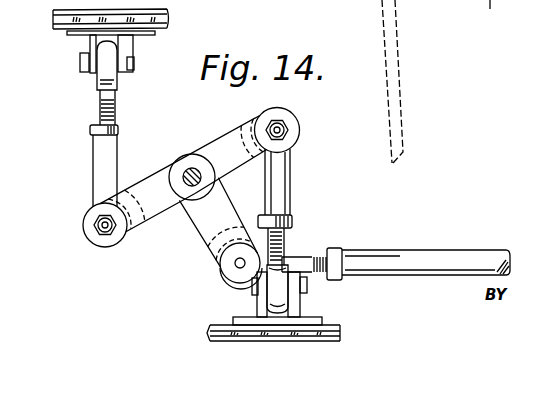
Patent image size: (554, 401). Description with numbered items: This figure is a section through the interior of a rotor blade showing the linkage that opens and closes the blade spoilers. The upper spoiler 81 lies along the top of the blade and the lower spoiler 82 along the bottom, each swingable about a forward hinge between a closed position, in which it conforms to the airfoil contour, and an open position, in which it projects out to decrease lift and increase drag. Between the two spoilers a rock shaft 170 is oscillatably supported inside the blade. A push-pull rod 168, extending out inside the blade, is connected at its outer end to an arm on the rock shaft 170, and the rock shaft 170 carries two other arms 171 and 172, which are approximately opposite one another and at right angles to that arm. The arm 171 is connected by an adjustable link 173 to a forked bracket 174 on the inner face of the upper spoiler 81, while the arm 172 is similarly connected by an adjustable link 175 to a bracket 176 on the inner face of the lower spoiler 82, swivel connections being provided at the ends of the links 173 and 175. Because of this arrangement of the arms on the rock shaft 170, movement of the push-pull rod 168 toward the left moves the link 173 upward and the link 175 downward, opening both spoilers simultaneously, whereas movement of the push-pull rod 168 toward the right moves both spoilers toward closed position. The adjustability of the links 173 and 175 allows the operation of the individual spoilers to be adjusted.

The upper spoiler 81 is at (155, 15).
The lower spoiler 82 is at (273, 341).
The push-pull rod 168 is at (394, 253).
The rock shaft 170 is at (185, 154).
The arm 171 is at (148, 233).
The arm 172 is at (237, 117).
The adjustable link 173 is at (93, 167).
The forked bracket 174 is at (88, 47).
The adjustable link 175 is at (292, 177).
The bracket 176 is at (300, 305).